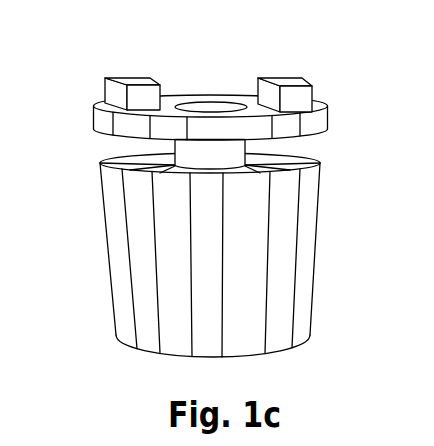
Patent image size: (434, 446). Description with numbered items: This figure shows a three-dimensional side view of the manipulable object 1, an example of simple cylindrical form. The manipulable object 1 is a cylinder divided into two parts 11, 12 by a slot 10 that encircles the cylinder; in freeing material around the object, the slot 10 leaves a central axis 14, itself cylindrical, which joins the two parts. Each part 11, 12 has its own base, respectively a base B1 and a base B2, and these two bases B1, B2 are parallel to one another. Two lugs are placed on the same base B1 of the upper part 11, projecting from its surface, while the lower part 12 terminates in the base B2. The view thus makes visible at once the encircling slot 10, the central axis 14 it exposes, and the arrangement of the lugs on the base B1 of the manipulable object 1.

The manipulable object 1 is at (264, 46).
The slot 10 is at (212, 101).
The first part 11 is at (249, 85).
The second part 12 is at (247, 270).
The central axis 14 is at (233, 152).
The base B1 is at (203, 104).
The base B2 is at (280, 354).